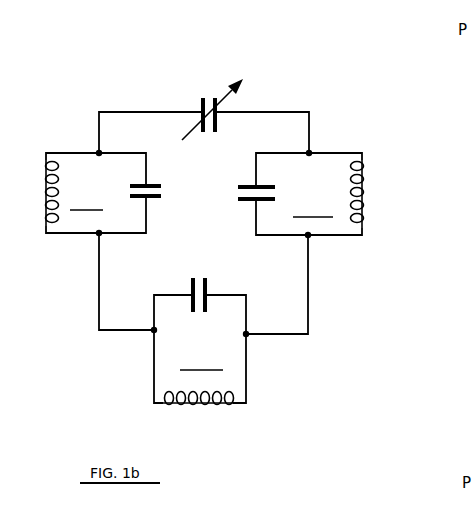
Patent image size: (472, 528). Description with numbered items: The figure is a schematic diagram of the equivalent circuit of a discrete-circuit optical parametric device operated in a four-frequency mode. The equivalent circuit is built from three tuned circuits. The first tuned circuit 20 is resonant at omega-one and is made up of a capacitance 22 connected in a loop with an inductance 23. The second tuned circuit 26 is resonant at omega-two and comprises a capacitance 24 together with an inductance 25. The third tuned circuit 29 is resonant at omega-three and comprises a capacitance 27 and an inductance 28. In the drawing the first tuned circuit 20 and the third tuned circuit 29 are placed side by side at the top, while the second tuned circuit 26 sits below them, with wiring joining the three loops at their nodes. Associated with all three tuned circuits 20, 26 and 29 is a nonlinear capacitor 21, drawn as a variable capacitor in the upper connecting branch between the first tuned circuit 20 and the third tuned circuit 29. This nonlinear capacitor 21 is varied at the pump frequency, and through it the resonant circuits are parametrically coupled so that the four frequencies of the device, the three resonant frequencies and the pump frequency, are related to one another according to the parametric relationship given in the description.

The tuned circuit 20 is at (88, 243).
The nonlinear capacitor 21 is at (222, 108).
The capacitance 22 is at (152, 198).
The inductance 23 is at (46, 153).
The capacitance 24 is at (208, 292).
The inductance 25 is at (172, 405).
The tuned circuit 26 is at (144, 367).
The capacitance 27 is at (264, 186).
The inductance 28 is at (368, 190).
The tuned circuit 29 is at (361, 153).